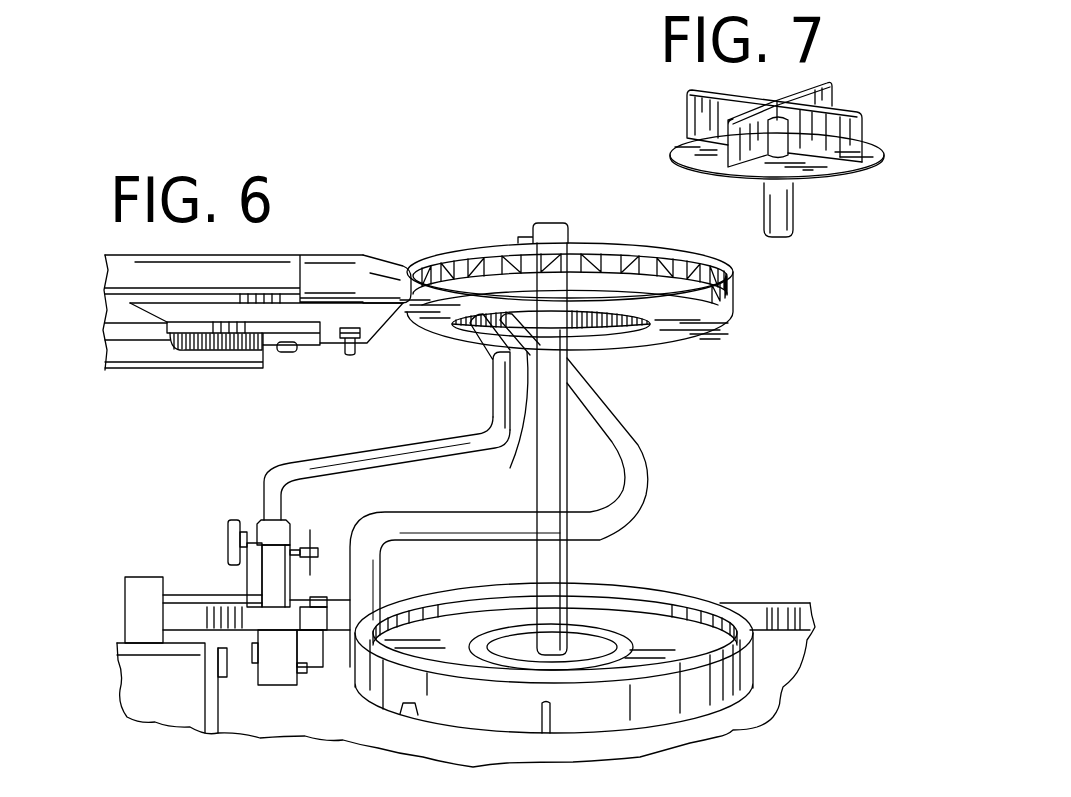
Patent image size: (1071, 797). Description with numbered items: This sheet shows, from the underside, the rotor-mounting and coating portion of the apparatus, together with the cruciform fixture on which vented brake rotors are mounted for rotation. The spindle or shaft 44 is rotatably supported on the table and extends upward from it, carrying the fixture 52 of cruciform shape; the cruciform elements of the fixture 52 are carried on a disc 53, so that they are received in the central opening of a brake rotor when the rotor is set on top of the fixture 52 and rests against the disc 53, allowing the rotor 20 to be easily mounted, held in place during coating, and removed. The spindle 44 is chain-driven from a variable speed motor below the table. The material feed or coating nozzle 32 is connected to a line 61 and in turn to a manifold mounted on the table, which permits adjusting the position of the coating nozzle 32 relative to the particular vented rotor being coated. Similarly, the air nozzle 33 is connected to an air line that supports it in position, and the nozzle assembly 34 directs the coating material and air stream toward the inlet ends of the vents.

In FIG. 6, the rotary platform disk 20 is at (738, 277).
In FIG. 6, the material feed or coating nozzle 32 is at (485, 353).
In FIG. 6, the air nozzle 33 is at (527, 437).
In FIG. 6, the nozzle gun 34 is at (333, 258).
In FIG. 6, the line 61 is at (340, 458).
In FIG. 7, the spindle or shaft 44 is at (782, 214).
In FIG. 7, the fixture 52 is at (836, 80).
In FIG. 7, the disc 53 is at (877, 145).